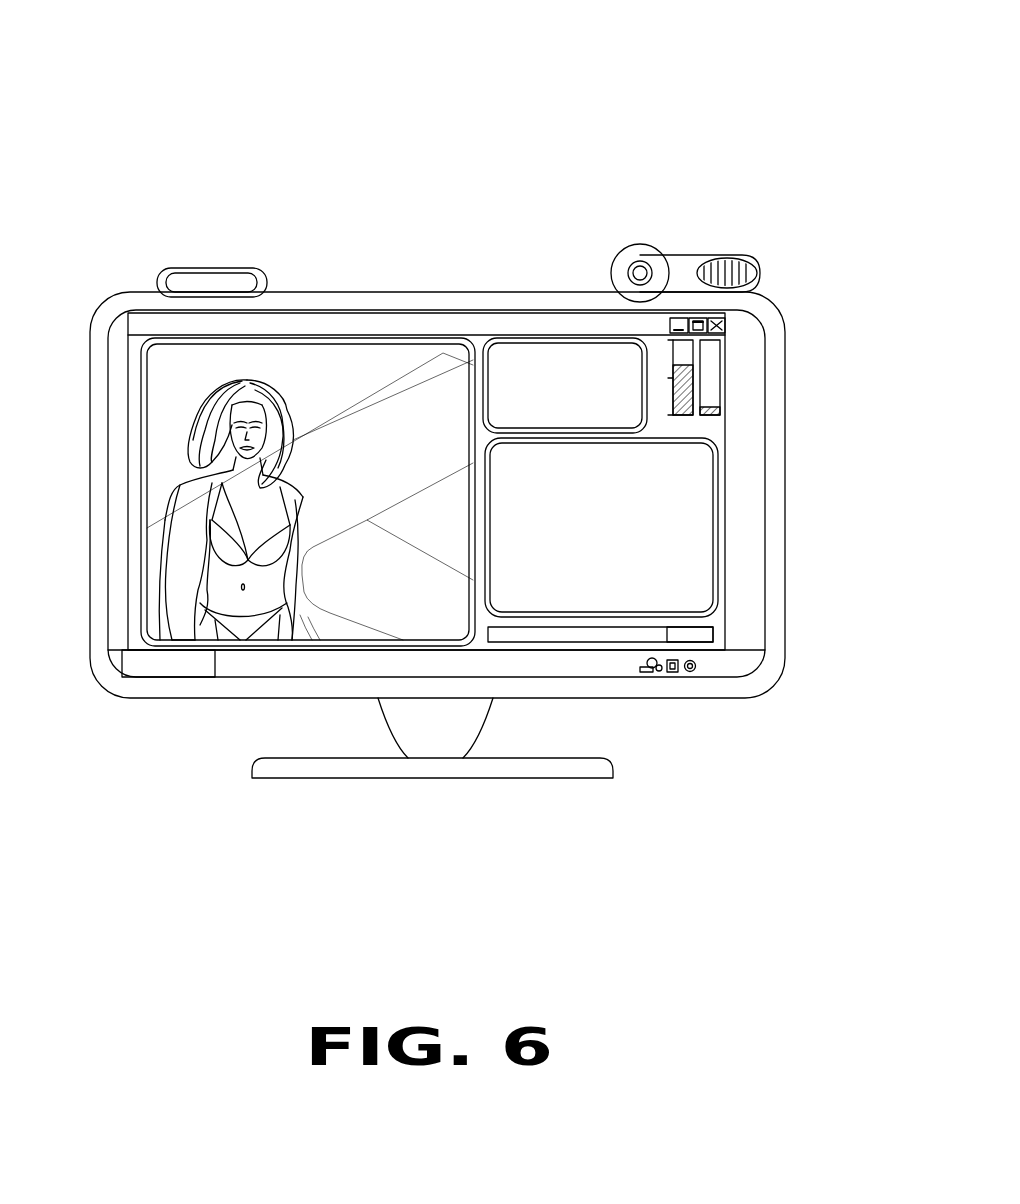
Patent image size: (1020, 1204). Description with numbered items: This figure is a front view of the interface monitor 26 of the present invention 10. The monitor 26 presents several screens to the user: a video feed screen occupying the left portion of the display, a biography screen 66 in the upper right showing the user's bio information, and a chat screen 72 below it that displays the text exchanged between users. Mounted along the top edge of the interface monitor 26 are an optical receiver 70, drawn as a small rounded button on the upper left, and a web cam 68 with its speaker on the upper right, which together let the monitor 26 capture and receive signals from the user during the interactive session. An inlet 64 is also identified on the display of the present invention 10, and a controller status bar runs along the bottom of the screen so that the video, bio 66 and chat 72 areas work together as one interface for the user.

The present invention 10 is at (668, 117).
The interface monitor 26 is at (250, 690).
The inlet 64 is at (343, 357).
The biography screen 66 is at (558, 348).
The web cam 68 is at (682, 259).
The optical receiver 70 is at (243, 275).
The chat screen 72 is at (615, 632).